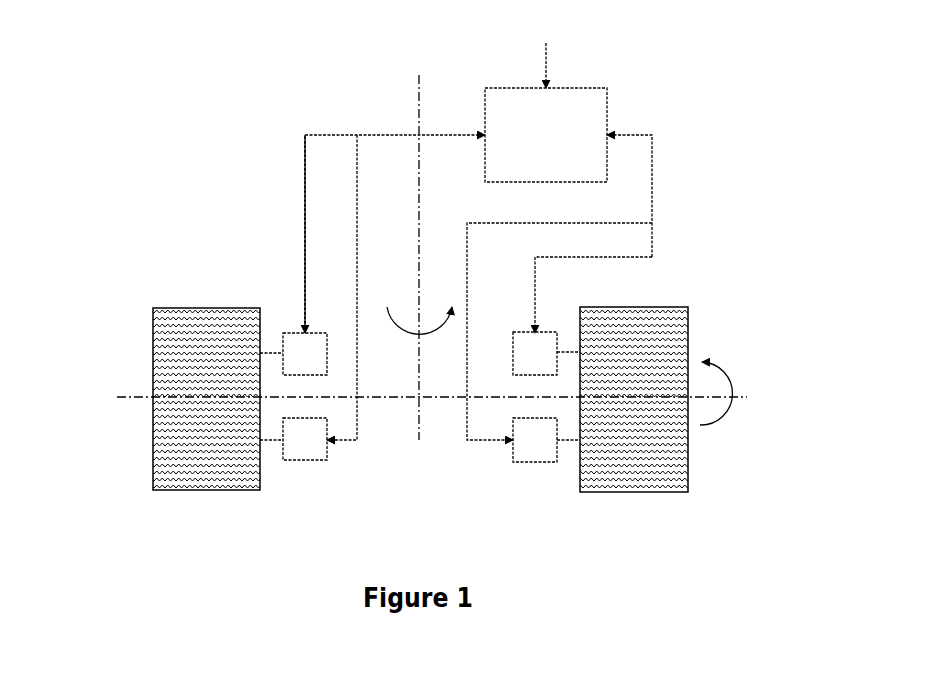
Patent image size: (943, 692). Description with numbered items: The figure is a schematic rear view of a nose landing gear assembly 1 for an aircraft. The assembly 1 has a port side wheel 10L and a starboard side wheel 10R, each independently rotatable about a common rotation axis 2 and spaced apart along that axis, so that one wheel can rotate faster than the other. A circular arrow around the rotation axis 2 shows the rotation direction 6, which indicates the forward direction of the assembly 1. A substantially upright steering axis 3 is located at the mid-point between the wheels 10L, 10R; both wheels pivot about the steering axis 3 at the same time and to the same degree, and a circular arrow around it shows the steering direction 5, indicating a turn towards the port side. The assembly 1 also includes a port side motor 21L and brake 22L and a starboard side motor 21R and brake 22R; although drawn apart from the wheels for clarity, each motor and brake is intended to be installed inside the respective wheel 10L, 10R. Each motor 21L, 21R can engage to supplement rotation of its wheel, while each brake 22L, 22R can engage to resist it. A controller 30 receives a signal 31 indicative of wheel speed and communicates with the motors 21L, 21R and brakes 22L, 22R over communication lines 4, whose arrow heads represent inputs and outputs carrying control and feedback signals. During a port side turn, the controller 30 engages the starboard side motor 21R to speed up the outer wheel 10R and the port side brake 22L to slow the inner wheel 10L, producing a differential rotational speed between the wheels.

The nose landing gear assembly 1 is at (180, 75).
The rotation axis 2 is at (130, 400).
The steering axis 3 is at (418, 105).
The communication lines 4 is at (303, 172).
The steering direction 5 is at (405, 330).
The rotation direction 6 is at (728, 373).
The port side wheel 10L is at (153, 330).
The starboard side wheel 10R is at (688, 330).
The port side motor 21L is at (295, 334).
The starboard side motor 21R is at (550, 330).
The port side brake 22L is at (315, 460).
The starboard side brake 22R is at (530, 462).
The controller 30 is at (607, 112).
The signal 31 is at (548, 62).